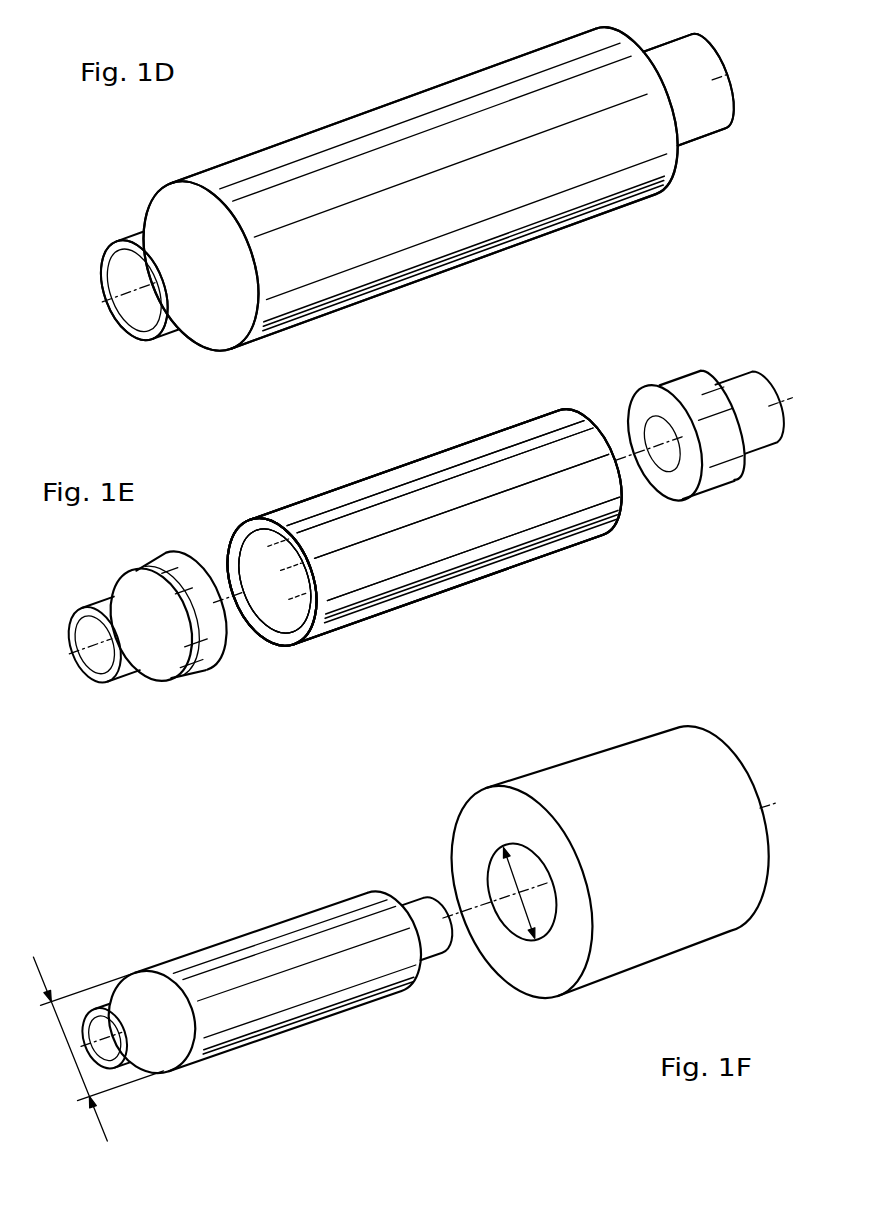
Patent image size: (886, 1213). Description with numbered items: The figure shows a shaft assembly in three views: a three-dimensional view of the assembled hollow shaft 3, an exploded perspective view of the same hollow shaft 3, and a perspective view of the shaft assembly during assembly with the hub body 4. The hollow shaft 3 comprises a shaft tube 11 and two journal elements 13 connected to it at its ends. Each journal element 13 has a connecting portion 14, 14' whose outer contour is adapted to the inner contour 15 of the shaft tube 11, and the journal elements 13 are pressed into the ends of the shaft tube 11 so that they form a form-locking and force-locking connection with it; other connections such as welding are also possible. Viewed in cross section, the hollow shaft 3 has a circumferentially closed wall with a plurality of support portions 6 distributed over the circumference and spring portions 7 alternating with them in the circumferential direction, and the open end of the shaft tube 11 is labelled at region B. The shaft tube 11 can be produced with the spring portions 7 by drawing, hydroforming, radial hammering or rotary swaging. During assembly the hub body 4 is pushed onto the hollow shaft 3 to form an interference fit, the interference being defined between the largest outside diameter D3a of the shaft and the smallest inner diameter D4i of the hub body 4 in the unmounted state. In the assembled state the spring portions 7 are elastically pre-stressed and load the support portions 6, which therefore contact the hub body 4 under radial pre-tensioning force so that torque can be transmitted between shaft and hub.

In FIG. 1D, the hollow shaft 3 is at (352, 101).
In FIG. 1F, the hollow shaft 3 is at (260, 910).
In FIG. 1D, the shaft tube 11 is at (470, 212).
In FIG. 1E, the shaft tube 11 is at (477, 546).
In FIG. 1D, the journal element 13 is at (150, 377).
In FIG. 1E, the journal element 13 is at (174, 707).
In FIG. 1E, the connecting portion 14 is at (167, 597).
In FIG. 1E, the connecting portion 14' is at (676, 414).
In FIG. 1E, the spring portion 7 is at (390, 497).
In FIG. 1E, the support portion 6 is at (410, 543).
In FIG. 1E, the inner contour 15 is at (262, 642).
In FIG. 1E, the bore / gap region B is at (224, 594).
In FIG. 1F, the bore / gap region B is at (457, 920).
In FIG. 1F, the hub body 4 is at (574, 737).
In FIG. 1F, the largest outside diameter of the shaft D3a is at (103, 1037).
In FIG. 1F, the smallest inner diameter of the hub body D4i is at (534, 914).